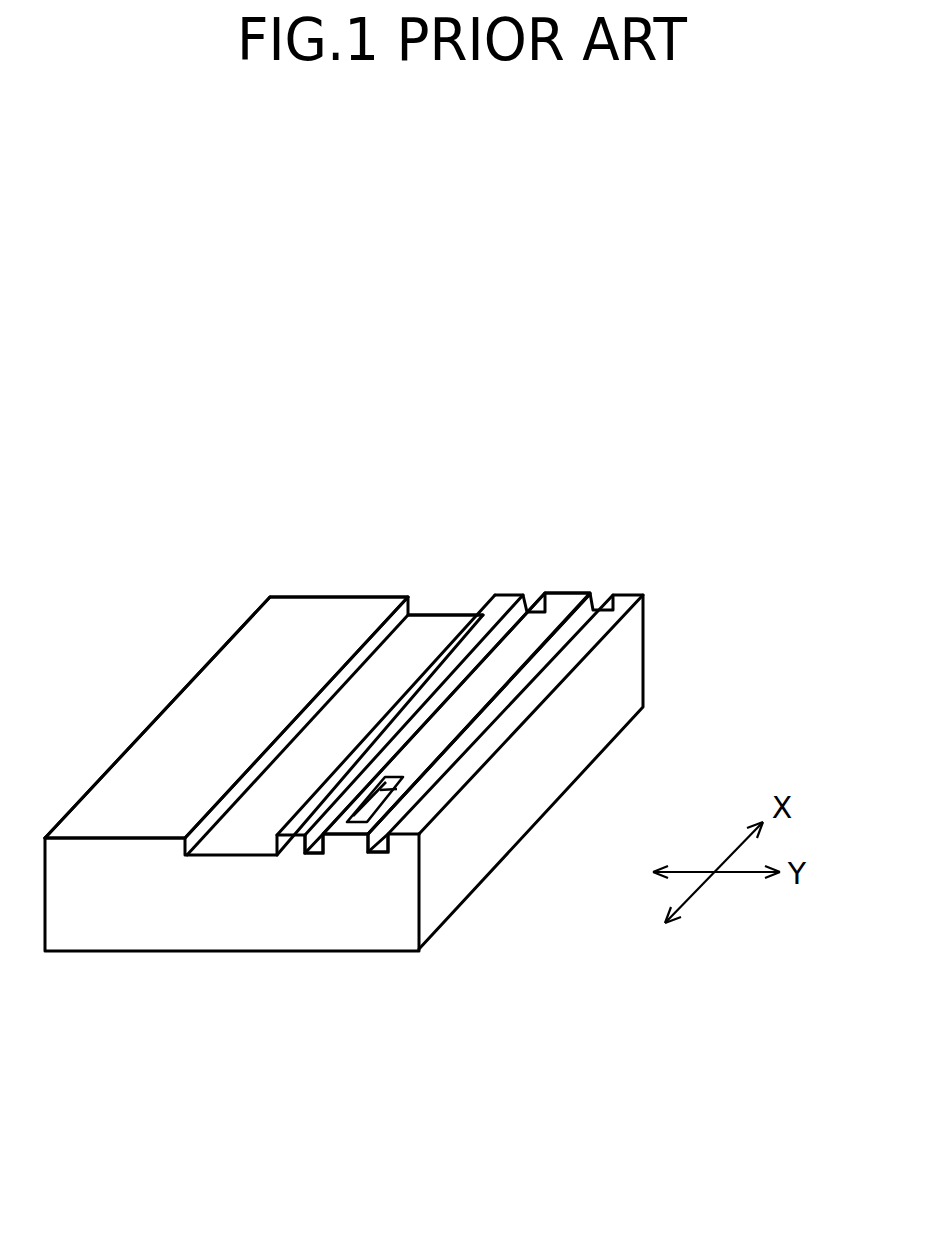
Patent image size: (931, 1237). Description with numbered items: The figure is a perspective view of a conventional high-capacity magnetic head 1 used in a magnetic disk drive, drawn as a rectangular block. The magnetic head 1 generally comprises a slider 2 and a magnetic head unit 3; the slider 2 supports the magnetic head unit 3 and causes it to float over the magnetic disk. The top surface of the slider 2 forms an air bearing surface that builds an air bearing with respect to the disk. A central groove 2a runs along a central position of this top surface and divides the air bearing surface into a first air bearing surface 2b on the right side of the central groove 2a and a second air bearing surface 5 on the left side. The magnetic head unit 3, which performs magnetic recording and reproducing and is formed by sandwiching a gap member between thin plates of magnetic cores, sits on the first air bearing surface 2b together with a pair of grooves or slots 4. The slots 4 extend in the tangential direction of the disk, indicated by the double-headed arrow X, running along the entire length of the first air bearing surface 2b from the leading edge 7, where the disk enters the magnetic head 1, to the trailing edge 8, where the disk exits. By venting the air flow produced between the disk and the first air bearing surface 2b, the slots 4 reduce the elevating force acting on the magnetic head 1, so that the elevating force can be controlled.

The magnetic head 1 is at (253, 542).
The slider 2 is at (657, 665).
The central groove 2a is at (438, 628).
The first air bearing surface 2b is at (447, 723).
The magnetic head unit 3 is at (395, 783).
The slots 4 is at (319, 851).
The second air bearing surface 5 is at (200, 716).
The leading edge 7 is at (563, 596).
The trailing edge 8 is at (345, 837).